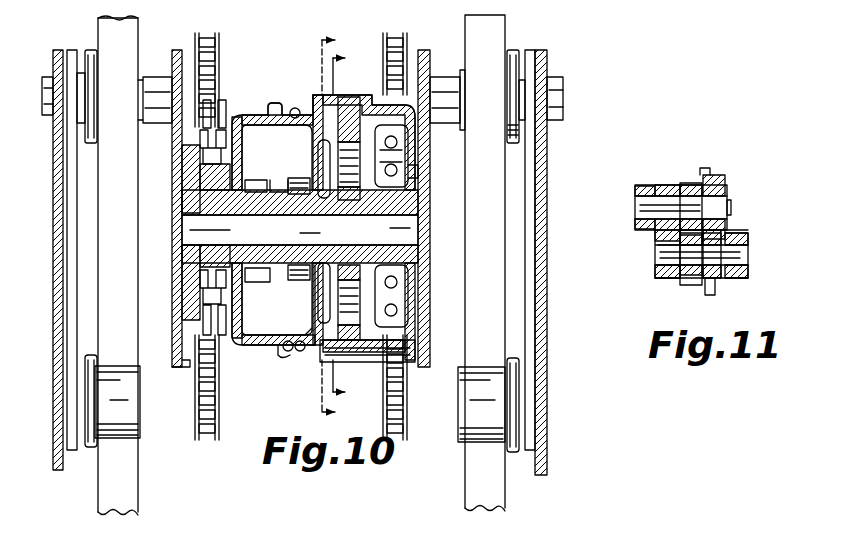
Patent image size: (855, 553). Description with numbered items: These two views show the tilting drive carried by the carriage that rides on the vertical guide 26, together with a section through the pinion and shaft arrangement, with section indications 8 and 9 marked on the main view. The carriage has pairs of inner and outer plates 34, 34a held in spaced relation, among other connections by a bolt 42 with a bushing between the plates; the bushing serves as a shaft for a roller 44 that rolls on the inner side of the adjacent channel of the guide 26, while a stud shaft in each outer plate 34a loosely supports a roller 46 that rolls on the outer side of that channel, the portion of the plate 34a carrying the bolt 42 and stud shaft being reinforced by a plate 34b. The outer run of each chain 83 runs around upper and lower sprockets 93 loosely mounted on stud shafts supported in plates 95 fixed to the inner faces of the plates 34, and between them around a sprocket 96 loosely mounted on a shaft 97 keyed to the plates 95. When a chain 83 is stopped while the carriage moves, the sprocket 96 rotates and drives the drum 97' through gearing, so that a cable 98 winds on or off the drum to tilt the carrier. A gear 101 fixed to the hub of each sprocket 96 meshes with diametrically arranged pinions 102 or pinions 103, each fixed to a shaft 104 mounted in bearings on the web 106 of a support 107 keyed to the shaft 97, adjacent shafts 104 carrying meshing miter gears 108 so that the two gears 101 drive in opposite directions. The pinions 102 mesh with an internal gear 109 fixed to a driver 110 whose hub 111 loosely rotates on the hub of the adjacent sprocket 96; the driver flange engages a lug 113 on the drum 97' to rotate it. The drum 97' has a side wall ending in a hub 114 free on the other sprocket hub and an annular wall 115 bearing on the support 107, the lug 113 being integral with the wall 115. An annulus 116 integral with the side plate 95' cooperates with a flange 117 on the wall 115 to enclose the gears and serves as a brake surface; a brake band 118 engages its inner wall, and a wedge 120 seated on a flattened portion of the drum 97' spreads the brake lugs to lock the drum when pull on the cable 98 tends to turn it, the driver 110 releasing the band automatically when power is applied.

In FIG. 10, the section line 8- 8 is at (335, 226).
In FIG. 10, the section line 9- 9 is at (346, 225).
In FIG. 10, the guide 26 is at (130, 492).
In FIG. 10, the inner plate 34 is at (172, 285).
In FIG. 10, the outer plate 34a is at (565, 272).
In FIG. 10, the reinforcing plate 34b is at (525, 207).
In FIG. 10, the bolt 42 is at (563, 99).
In FIG. 10, the roller 44 is at (88, 50).
In FIG. 10, the roller 46 is at (140, 435).
In FIG. 10, the chain 83 is at (195, 380).
In FIG. 10, the sprocket 93 is at (238, 117).
In FIG. 10, the plate 95 is at (183, 156).
In FIG. 10, the side plate 95' is at (322, 290).
In FIG. 10, the sprocket 96 is at (182, 200).
In FIG. 10, the shaft 97 is at (433, 194).
In FIG. 10, the drum 97' is at (282, 92).
In FIG. 10, the cable 98 is at (296, 108).
In FIG. 10, the gear 101 is at (258, 180).
In FIG. 11, the pinion 102 is at (640, 185).
In FIG. 11, the pinion 103 is at (745, 233).
In FIG. 11, the shaft 104 is at (735, 209).
In FIG. 11, the web 106 is at (665, 185).
In FIG. 10, the support 107 is at (285, 178).
In FIG. 11, the support 107 is at (712, 293).
In FIG. 10, the miter gear 108 is at (300, 178).
In FIG. 11, the miter gear 108 is at (690, 183).
In FIG. 10, the internal gear 109 is at (388, 125).
In FIG. 10, the driver 110 is at (300, 352).
In FIG. 10, the hub 111 is at (300, 226).
In FIG. 10, the lug 113 is at (327, 169).
In FIG. 10, the hub 114 is at (243, 283).
In FIG. 10, the annular wall 115 is at (310, 325).
In FIG. 10, the annulus 116 is at (325, 362).
In FIG. 10, the flange 117 is at (316, 95).
In FIG. 10, the brake band 118 is at (322, 362).
In FIG. 10, the wedge 120 is at (348, 97).